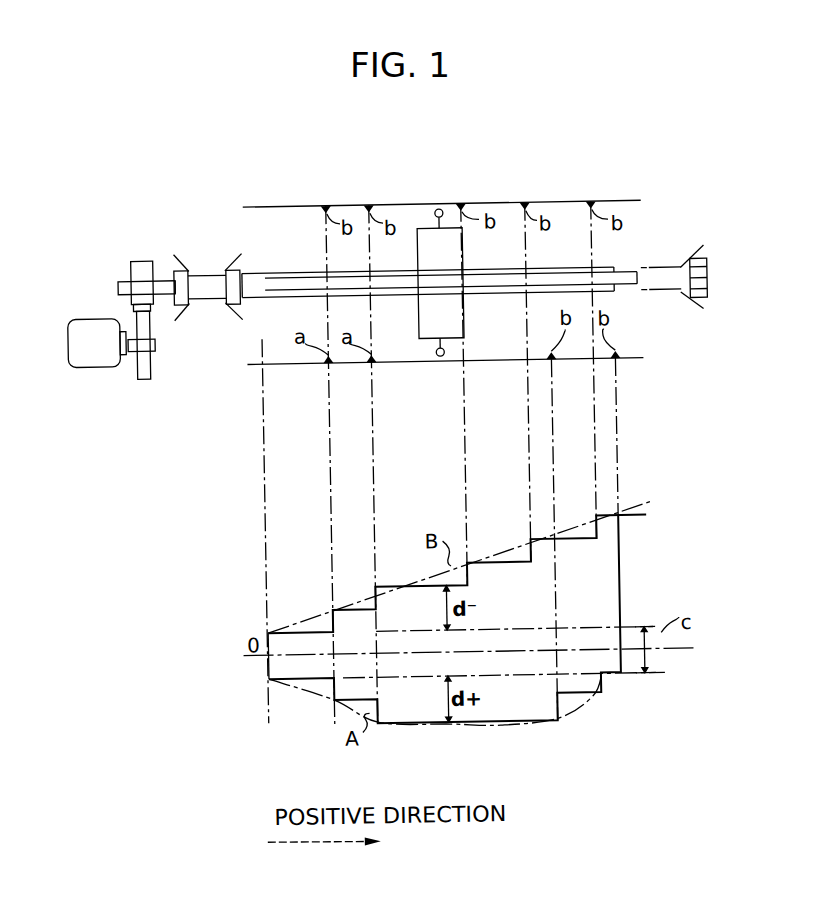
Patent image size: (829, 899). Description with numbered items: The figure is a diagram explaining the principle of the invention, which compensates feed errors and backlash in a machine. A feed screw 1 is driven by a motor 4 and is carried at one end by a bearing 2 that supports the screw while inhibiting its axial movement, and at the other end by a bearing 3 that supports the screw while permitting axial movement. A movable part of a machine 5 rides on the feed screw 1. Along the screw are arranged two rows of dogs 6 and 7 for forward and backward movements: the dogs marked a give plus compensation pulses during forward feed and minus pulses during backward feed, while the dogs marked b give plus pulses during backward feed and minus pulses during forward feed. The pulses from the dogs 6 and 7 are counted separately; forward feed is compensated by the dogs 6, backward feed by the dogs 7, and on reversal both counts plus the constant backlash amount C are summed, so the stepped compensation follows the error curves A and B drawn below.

The feed screw 1 is at (296, 270).
The bearing 2 is at (218, 268).
The bearing 3 is at (682, 270).
The motor 4 is at (102, 362).
The movable part of a machine 5 is at (467, 257).
The dogs 6 is at (501, 362).
The dogs 7 is at (513, 203).